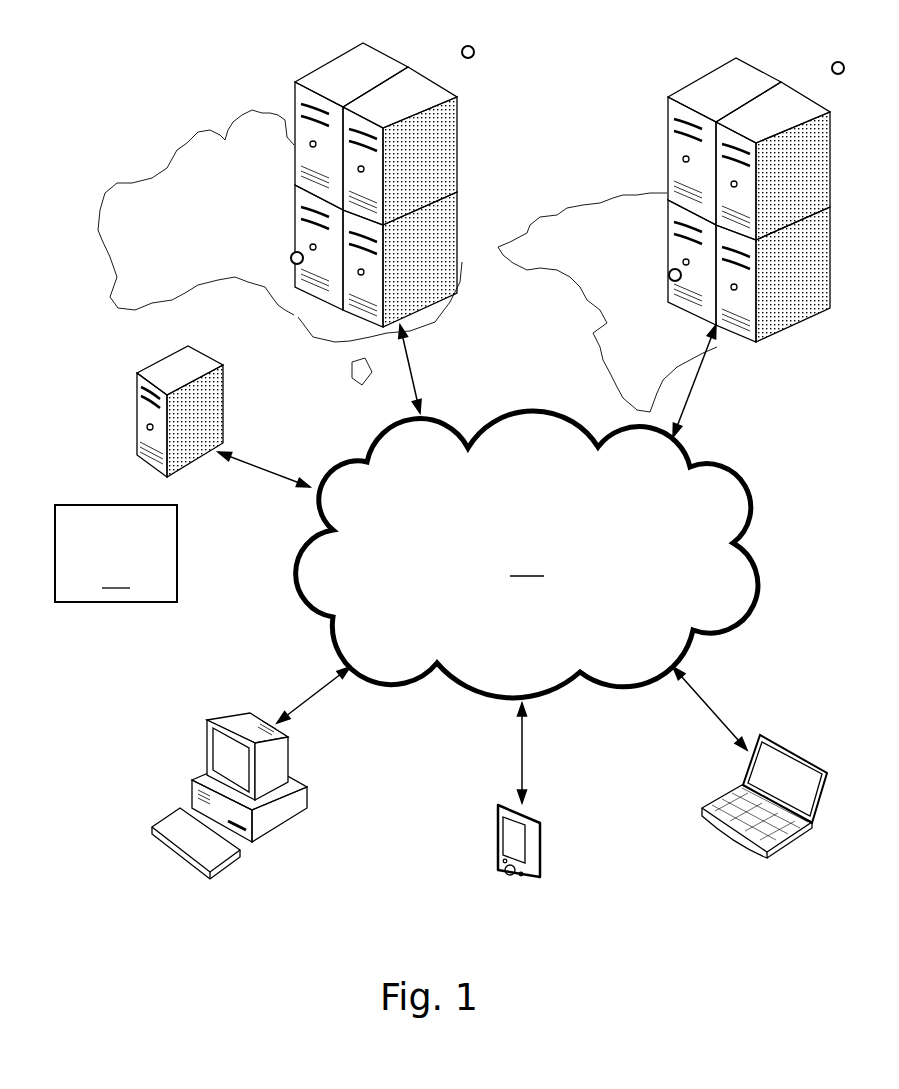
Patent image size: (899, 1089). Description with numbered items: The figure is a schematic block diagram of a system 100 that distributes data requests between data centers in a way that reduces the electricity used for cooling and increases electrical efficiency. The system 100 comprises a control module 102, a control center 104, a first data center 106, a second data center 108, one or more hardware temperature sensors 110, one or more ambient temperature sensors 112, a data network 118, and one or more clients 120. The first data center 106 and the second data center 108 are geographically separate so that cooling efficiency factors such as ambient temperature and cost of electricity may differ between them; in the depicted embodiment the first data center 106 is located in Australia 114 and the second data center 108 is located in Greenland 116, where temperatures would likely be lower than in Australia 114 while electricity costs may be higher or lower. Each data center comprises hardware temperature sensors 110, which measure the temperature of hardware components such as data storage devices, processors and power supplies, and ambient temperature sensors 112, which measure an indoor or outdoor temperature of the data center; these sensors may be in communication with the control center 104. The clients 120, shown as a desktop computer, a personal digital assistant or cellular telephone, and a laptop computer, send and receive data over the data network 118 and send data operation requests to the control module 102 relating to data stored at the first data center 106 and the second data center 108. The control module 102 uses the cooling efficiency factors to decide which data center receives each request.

The system 100 is at (78, 93).
The control module 102 is at (116, 553).
The control center 104 is at (150, 366).
The first data center 106 is at (318, 68).
The second data center 108 is at (691, 83).
The hardware temperature sensor 110 is at (292, 254).
The ambient temperature sensor 112 is at (463, 47).
The Australia 114 is at (152, 178).
The Greenland 116 is at (567, 210).
The data network 118 is at (527, 554).
The client 120 is at (220, 718).